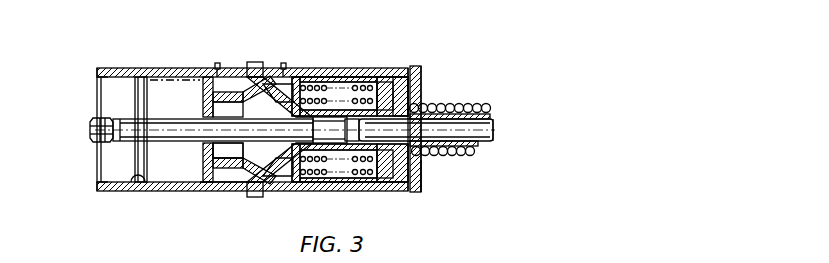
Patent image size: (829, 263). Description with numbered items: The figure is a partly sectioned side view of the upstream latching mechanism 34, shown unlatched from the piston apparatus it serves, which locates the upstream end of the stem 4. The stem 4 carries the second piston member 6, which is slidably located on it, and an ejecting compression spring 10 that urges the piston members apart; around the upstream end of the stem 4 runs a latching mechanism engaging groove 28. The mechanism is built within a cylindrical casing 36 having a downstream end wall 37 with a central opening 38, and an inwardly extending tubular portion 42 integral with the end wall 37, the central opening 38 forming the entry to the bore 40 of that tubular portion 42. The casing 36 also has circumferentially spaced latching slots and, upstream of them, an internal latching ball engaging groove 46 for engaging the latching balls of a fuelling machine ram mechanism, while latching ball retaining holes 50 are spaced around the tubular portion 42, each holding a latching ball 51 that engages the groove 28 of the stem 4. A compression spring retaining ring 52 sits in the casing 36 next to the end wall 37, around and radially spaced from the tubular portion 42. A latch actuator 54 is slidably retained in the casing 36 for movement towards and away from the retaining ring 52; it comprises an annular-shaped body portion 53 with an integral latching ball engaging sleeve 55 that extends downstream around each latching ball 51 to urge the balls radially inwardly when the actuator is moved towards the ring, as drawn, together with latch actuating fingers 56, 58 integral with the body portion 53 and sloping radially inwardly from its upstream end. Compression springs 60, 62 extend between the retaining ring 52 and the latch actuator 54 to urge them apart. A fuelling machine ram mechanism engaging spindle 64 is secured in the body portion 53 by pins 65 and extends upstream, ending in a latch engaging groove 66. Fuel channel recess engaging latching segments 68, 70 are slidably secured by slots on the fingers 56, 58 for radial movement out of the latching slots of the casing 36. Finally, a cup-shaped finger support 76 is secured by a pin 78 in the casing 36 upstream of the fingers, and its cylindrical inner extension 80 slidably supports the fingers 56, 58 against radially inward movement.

The stem 4 is at (492, 135).
The second piston member 6 is at (422, 150).
The ejecting compression spring 10 is at (460, 103).
The latching mechanism engaging groove 28 is at (335, 143).
The upstream latching mechanism 34 is at (216, 64).
The cylindrical casing 36 is at (137, 191).
The downstream end wall 37 is at (422, 168).
The central opening 38 is at (414, 192).
The bore 40 is at (362, 80).
The inwardly extending tubular portion 42 is at (442, 105).
The internal latching ball engaging groove 46 is at (122, 186).
The latching ball retaining holes 50 is at (350, 82).
The latching ball 51 is at (390, 80).
The compression spring retaining ring 52 is at (412, 78).
The annular-shaped body portion 53 is at (320, 78).
The latch actuator 54 is at (285, 64).
The latching ball engaging sleeve 55 is at (390, 182).
The latch actuating finger 56 is at (239, 77).
The latch actuating finger 58 is at (239, 191).
The compression spring 60 is at (370, 82).
The compression spring 62 is at (357, 168).
The fuelling machine ram mechanism engaging spindle 64 is at (157, 180).
The pins 65 is at (292, 182).
The fuelling machine ram mechanism latch engaging groove 66 is at (110, 117).
The latching segment 68 is at (252, 197).
The latching segment 70 is at (258, 62).
The cup-shaped finger support 76 is at (222, 160).
The pin 78 is at (200, 80).
The cylindrical inner extension 80 is at (180, 130).